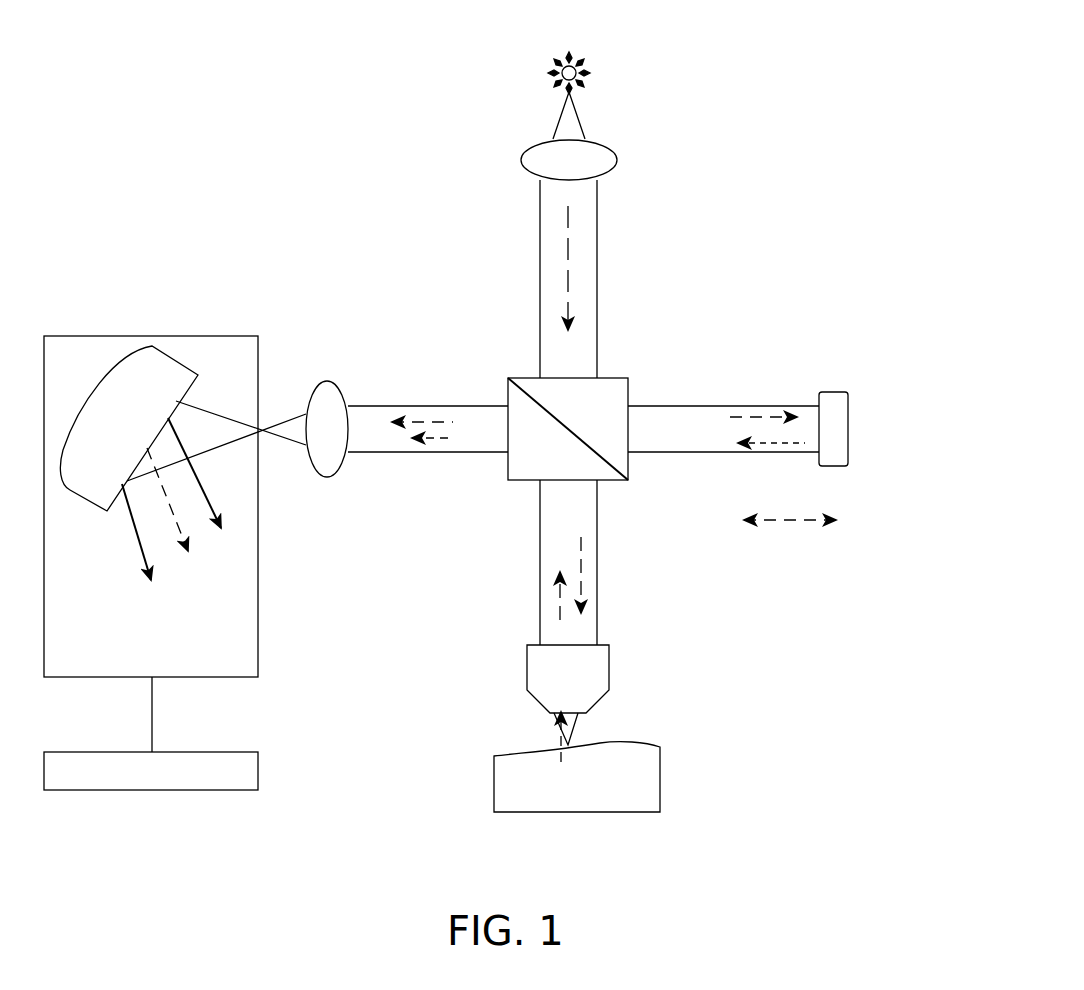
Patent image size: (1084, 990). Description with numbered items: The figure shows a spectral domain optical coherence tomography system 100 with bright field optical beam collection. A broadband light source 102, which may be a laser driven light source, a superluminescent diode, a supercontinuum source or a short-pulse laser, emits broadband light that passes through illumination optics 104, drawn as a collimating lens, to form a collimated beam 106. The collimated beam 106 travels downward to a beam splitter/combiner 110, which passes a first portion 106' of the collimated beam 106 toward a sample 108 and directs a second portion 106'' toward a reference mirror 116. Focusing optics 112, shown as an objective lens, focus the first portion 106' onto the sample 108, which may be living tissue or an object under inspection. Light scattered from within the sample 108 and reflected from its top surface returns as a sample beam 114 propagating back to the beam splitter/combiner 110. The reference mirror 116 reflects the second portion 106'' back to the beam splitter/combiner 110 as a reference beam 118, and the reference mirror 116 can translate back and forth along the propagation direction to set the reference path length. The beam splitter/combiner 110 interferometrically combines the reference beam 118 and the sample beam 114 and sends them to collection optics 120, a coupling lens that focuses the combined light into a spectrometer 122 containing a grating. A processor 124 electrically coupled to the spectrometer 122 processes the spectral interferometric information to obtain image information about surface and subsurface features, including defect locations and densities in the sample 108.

The spectral domain optical coherence tomography system 100 is at (733, 65).
The broadband light source 102 is at (583, 64).
The illumination optics 104 is at (617, 160).
The collimated beam 106 is at (609, 279).
The first portion of the collimated beam 106' is at (612, 562).
The second portion of the collimated beam 106'' is at (723, 400).
The sample 108 is at (660, 780).
The beam splitter/combiner 110 is at (628, 392).
The focusing optics 112 is at (609, 668).
The sample beam 114 is at (560, 600).
The reference mirror 116 is at (830, 392).
The reference beam 118 is at (792, 455).
The collection optics 120 is at (327, 381).
The spectrometer 122 is at (155, 336).
The processor 124 is at (258, 770).